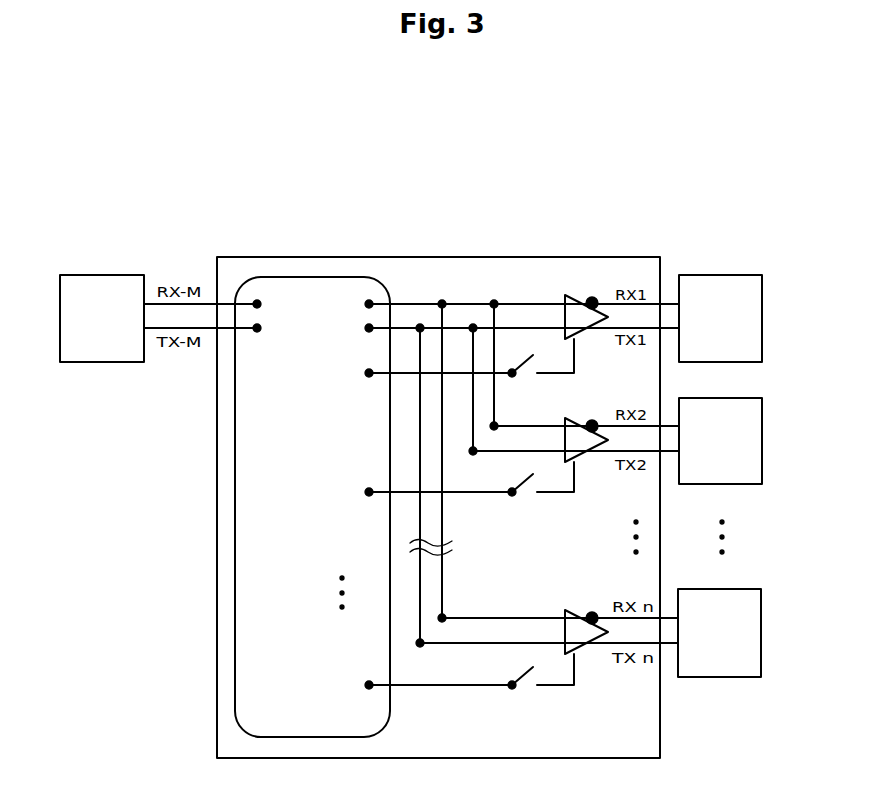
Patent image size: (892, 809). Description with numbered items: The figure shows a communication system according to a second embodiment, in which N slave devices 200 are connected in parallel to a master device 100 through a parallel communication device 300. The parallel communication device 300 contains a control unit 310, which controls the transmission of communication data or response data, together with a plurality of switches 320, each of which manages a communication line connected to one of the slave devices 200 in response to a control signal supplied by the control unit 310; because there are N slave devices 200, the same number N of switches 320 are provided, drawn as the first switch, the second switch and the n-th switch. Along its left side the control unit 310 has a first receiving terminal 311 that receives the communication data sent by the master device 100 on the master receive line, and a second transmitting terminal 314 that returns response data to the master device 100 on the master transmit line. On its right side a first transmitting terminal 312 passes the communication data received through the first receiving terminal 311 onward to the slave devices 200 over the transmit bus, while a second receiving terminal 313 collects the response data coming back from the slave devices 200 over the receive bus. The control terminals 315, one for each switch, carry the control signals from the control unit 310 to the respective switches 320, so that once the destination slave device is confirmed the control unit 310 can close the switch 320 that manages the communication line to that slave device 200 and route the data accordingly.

The master device 100 is at (102, 275).
The slave devices 200 is at (781, 681).
The parallel communication device 300 is at (497, 257).
The control unit 310 is at (313, 277).
The first receiving terminal 311 is at (257, 300).
The first transmitting terminal 312 is at (369, 300).
The second receiving terminal 313 is at (369, 332).
The second transmitting terminal 314 is at (257, 332).
The control terminals (CON1..CONn) 315 is at (369, 378).
The switches 320 is at (553, 387).